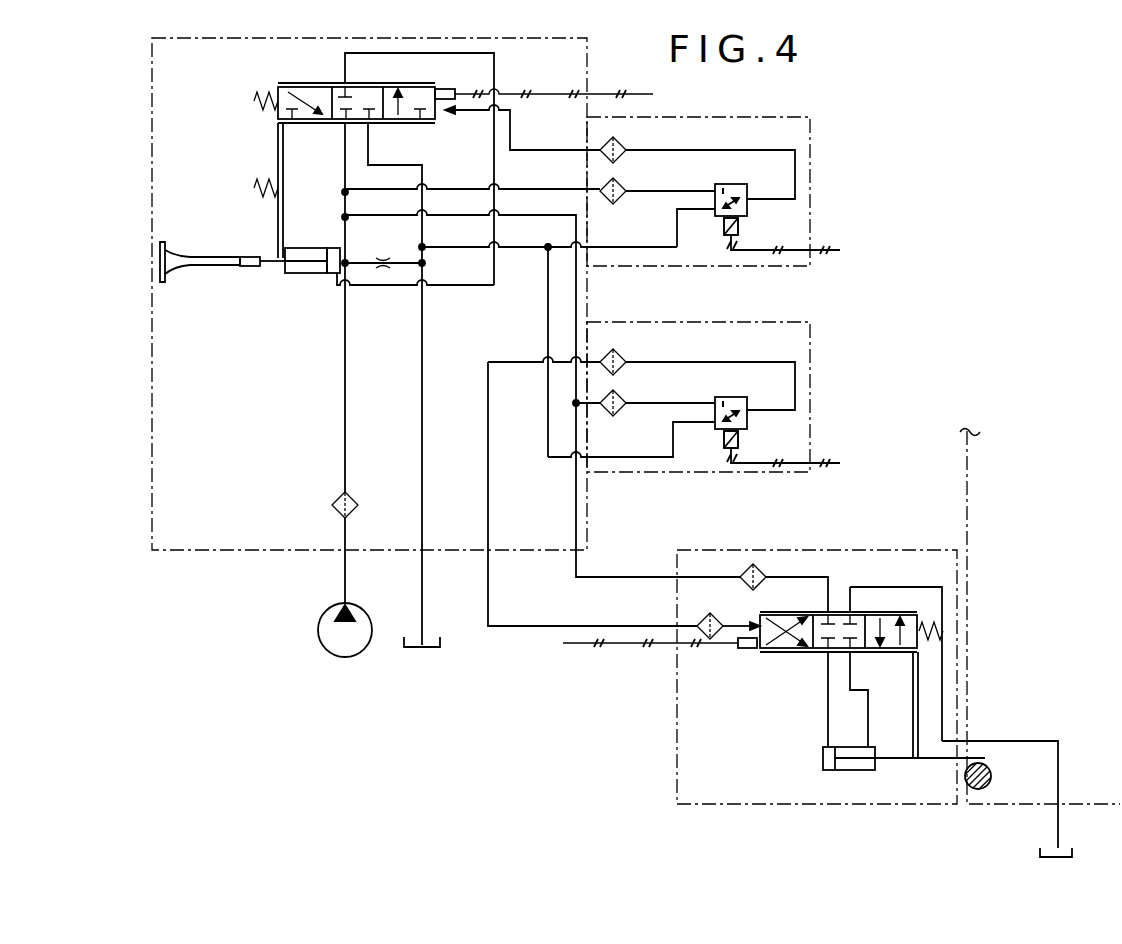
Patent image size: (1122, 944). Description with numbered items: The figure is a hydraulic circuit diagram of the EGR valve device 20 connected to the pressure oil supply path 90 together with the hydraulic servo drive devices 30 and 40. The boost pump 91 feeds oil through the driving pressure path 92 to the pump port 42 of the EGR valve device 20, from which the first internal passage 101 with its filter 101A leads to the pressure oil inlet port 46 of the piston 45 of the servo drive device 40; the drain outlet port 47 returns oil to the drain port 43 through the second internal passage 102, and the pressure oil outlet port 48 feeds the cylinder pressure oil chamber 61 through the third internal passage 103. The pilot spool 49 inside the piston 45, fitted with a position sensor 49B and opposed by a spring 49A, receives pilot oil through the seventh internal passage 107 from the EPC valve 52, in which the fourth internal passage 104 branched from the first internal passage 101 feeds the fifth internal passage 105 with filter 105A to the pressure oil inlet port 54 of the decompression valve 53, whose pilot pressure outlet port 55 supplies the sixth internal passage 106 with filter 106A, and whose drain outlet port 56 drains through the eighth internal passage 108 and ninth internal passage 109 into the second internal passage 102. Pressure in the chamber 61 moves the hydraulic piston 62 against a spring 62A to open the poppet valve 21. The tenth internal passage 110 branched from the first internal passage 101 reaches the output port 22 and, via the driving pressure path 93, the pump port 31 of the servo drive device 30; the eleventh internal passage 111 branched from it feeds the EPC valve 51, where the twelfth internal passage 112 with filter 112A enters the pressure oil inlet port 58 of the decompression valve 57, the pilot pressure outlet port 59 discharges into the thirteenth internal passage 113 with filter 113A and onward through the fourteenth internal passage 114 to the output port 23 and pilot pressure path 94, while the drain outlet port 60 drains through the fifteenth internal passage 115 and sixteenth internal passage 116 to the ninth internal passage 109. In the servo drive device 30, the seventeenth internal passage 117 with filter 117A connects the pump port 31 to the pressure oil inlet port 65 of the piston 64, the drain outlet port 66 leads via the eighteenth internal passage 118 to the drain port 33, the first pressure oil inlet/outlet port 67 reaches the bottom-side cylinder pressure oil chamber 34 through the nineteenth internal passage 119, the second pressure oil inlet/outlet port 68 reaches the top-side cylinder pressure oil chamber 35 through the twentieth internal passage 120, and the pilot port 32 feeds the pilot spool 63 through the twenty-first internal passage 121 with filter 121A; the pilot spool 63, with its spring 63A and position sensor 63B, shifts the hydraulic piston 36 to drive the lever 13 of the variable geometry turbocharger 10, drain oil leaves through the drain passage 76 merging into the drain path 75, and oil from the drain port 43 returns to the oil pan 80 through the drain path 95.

The variable geometry turbocharger 10 is at (963, 433).
The lever 13 is at (985, 764).
The EGR valve device 20 is at (152, 56).
The poppet valve 21 is at (218, 256).
The output port 22 is at (575, 553).
The output port 23 is at (490, 553).
The hydraulic servo drive device 30 is at (760, 806).
The pump port 31 is at (675, 576).
The pilot port 32 is at (640, 624).
The drain port 33 is at (947, 737).
The bottom-side cylinder pressure oil chamber 34 is at (822, 752).
The top-side cylinder pressure oil chamber 35 is at (868, 772).
The hydraulic piston 36 is at (830, 772).
The hydraulic servo drive device 40 is at (310, 81).
The pump port 42 is at (347, 553).
The drain port 43 is at (424, 553).
The piston 45 is at (320, 80).
The pressure oil inlet port 46 is at (345, 126).
The drain outlet port 47 is at (369, 126).
The pressure oil outlet port 48 is at (348, 76).
The pilot spool 49 is at (280, 126).
The spring 49A is at (254, 101).
The position sensor 49B is at (446, 89).
The EPC valve 51 is at (810, 350).
The EPC valve 52 is at (810, 143).
The decompression valve 53 is at (749, 195).
The pressure oil inlet port 54 is at (725, 187).
The pilot pressure outlet port 55 is at (741, 224).
The drain outlet port 56 is at (714, 211).
The decompression valve 57 is at (749, 412).
The pressure oil inlet port 58 is at (725, 400).
The pilot pressure outlet port 59 is at (741, 438).
The drain outlet port 60 is at (713, 425).
The cylinder pressure oil chamber 61 is at (333, 247).
The hydraulic piston 62 is at (322, 275).
The spring 62A is at (254, 188).
The pilot spool 63 is at (833, 653).
The spring 63A is at (945, 630).
The position sensor 63B is at (741, 650).
The piston 64 is at (822, 682).
The pressure oil inlet port 65 is at (825, 609).
The drain outlet port 66 is at (853, 608).
The first pressure oil inlet/outlet port 67 is at (825, 655).
The second pressure oil inlet/outlet port 68 is at (856, 655).
The drain path 75 is at (1060, 826).
The drain passage 76 is at (966, 737).
The oil pan 80 is at (422, 650).
The pressure oil supply path 90 is at (789, 263).
The boost pump 91 is at (334, 648).
The driving pressure path 92 is at (343, 575).
The driving pressure path 93 is at (618, 575).
The pilot pressure path 94 is at (520, 628).
The drain path 95 is at (425, 610).
The first internal passage 101 is at (343, 377).
The filter 101A is at (332, 503).
The second internal passage 102 is at (421, 412).
The third internal passage 103 is at (455, 288).
The fourth internal passage 104 is at (512, 188).
The fifth internal passage 105 is at (658, 189).
The filter 105A is at (618, 202).
The sixth internal passage 106 is at (713, 149).
The filter 106A is at (626, 146).
The seventh internal passage 107 is at (512, 130).
The eighth internal passage 108 is at (646, 250).
The ninth internal passage 109 is at (520, 250).
The tenth internal passage 110 is at (512, 215).
The eleventh internal passage 111 is at (580, 412).
The twelfth internal passage 112 is at (688, 402).
The filter 112A is at (623, 396).
The thirteenth internal passage 113 is at (723, 360).
The filter 113A is at (626, 357).
The fourteenth internal passage 114 is at (500, 360).
The fifteenth internal passage 115 is at (638, 455).
The sixteenth internal passage 116 is at (546, 412).
The seventeenth internal passage 117 is at (795, 577).
The filter 117A is at (747, 568).
The eighteenth internal passage 118 is at (882, 588).
The nineteenth internal passage 119 is at (826, 725).
The twentieth internal passage 120 is at (870, 704).
The twenty-first internal passage 121 is at (737, 622).
The filter 121A is at (700, 618).